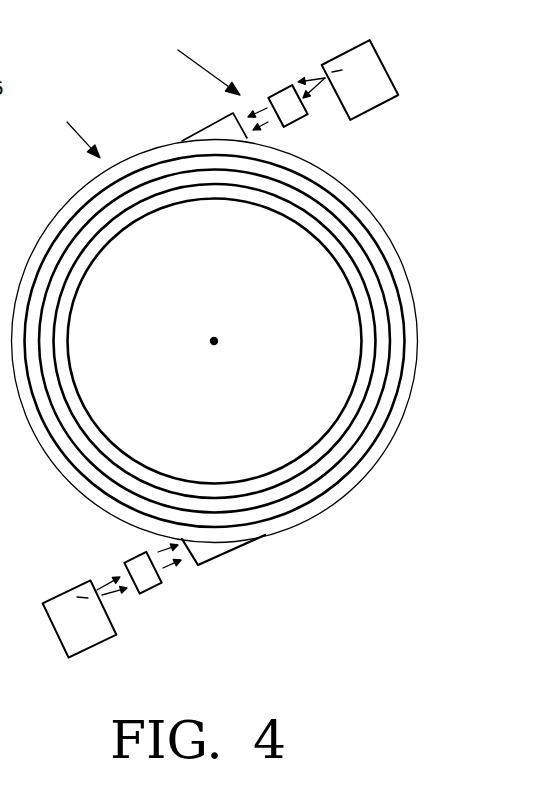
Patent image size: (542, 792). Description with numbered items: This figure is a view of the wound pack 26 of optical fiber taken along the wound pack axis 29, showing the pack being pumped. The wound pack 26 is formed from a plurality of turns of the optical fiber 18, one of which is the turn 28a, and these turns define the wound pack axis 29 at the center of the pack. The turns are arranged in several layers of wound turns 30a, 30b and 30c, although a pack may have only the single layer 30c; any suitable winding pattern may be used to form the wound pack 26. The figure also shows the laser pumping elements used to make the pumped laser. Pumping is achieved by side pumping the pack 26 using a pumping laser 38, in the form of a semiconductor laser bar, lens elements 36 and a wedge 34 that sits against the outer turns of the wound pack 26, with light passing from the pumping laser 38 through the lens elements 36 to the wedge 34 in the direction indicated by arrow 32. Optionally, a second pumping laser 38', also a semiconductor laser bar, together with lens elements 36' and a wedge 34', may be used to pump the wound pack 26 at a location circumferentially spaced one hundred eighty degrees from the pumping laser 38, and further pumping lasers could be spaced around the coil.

The wound pack 26 is at (227, 321).
The turn 28a is at (323, 510).
The layer of wound turns 30a is at (340, 193).
The layer of wound turns 30b is at (352, 223).
The layer of wound turns 30c is at (357, 258).
The optical fiber 18 is at (67, 474).
The wound pack axis 29 is at (214, 348).
The direction of tape application 32 is at (231, 73).
The wedge 34 is at (204, 111).
The lens elements 36 is at (275, 89).
The pumping laser 38 is at (359, 67).
The wedge 34' is at (247, 567).
The lens elements 36' is at (181, 587).
The pumping laser 38' is at (108, 625).